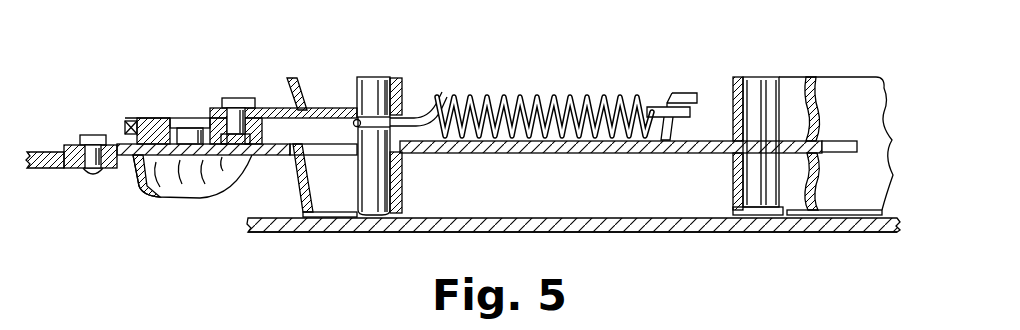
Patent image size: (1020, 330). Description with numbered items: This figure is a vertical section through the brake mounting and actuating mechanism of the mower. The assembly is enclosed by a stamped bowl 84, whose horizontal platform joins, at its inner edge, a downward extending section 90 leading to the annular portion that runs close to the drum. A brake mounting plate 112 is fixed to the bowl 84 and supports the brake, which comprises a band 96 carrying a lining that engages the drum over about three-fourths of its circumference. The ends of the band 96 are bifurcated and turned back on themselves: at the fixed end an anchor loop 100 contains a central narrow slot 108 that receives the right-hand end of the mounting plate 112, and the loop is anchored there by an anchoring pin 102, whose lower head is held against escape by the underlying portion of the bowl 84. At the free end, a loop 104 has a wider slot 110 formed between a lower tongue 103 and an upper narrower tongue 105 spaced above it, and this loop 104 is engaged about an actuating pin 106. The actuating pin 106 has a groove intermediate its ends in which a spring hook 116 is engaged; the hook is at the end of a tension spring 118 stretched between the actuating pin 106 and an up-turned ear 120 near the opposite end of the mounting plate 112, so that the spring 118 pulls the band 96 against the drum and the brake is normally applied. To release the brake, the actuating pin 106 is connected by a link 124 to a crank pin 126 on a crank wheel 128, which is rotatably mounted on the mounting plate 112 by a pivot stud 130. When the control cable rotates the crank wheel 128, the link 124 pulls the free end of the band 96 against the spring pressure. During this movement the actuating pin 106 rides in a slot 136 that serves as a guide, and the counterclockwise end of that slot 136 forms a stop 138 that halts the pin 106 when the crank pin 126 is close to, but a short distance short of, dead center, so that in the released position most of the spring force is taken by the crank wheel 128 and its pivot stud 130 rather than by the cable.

The stamped bowl 84 is at (858, 234).
The downward extending section 90 is at (800, 233).
The band 96 is at (850, 88).
The anchor loop 100 is at (733, 80).
The anchoring pin 102 is at (750, 88).
The lower tongue 103 is at (402, 188).
The loop 104 is at (410, 81).
The upper narrower tongue 105 is at (431, 94).
The actuating pin 106 is at (370, 83).
The central narrow slot 108 is at (840, 141).
The wider slot 110 is at (336, 110).
The brake mounting plate 112 is at (663, 154).
The spring hook 116 is at (356, 126).
The tension spring 118 is at (533, 95).
The up-turned ear 120 is at (672, 103).
The link 124 is at (268, 107).
The crank pin 126 is at (233, 98).
The crank wheel 128 is at (150, 118).
The pivot stud 130 is at (188, 118).
The slot 136 is at (356, 156).
The stop 138 is at (289, 172).